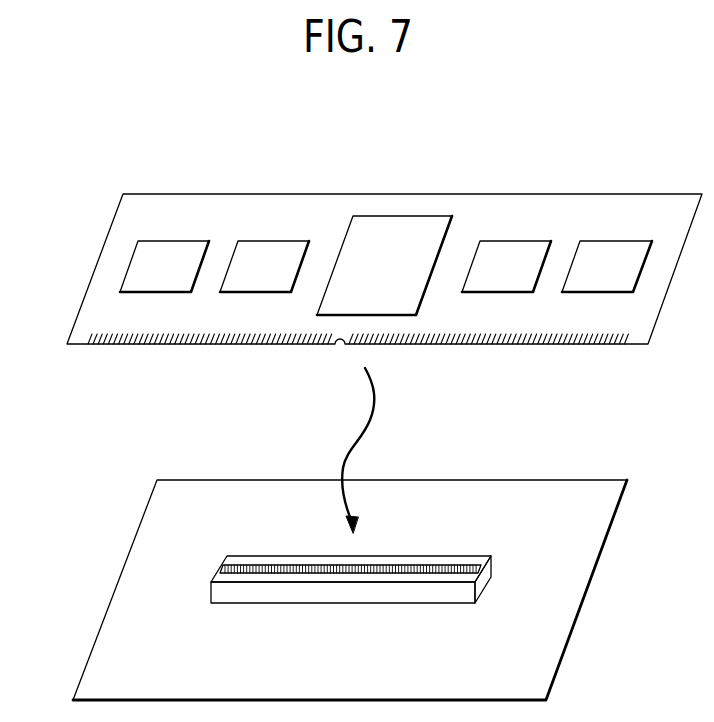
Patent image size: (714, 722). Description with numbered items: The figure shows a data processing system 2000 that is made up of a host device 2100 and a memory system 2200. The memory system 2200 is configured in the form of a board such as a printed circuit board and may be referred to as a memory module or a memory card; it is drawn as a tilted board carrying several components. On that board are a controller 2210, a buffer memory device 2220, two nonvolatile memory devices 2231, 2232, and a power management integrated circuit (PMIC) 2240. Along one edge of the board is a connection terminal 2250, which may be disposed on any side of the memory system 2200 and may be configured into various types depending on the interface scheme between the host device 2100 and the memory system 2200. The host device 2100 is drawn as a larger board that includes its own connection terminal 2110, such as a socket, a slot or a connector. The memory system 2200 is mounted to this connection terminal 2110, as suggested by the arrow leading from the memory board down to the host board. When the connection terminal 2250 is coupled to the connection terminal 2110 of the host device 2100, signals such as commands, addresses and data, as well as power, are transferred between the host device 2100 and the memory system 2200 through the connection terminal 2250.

The data processing system 2000 is at (74, 159).
The memory system 2200 is at (384, 291).
The controller 2210 is at (384, 265).
The buffer memory device 2220 is at (264, 266).
The nonvolatile memory device 2231 is at (506, 266).
The nonvolatile memory device 2232 is at (607, 266).
The power management integrated circuit (PMIC) 2240 is at (164, 266).
The connection terminal 2250 is at (105, 345).
The host device 2100 is at (350, 590).
The connection terminal 2110 is at (493, 562).